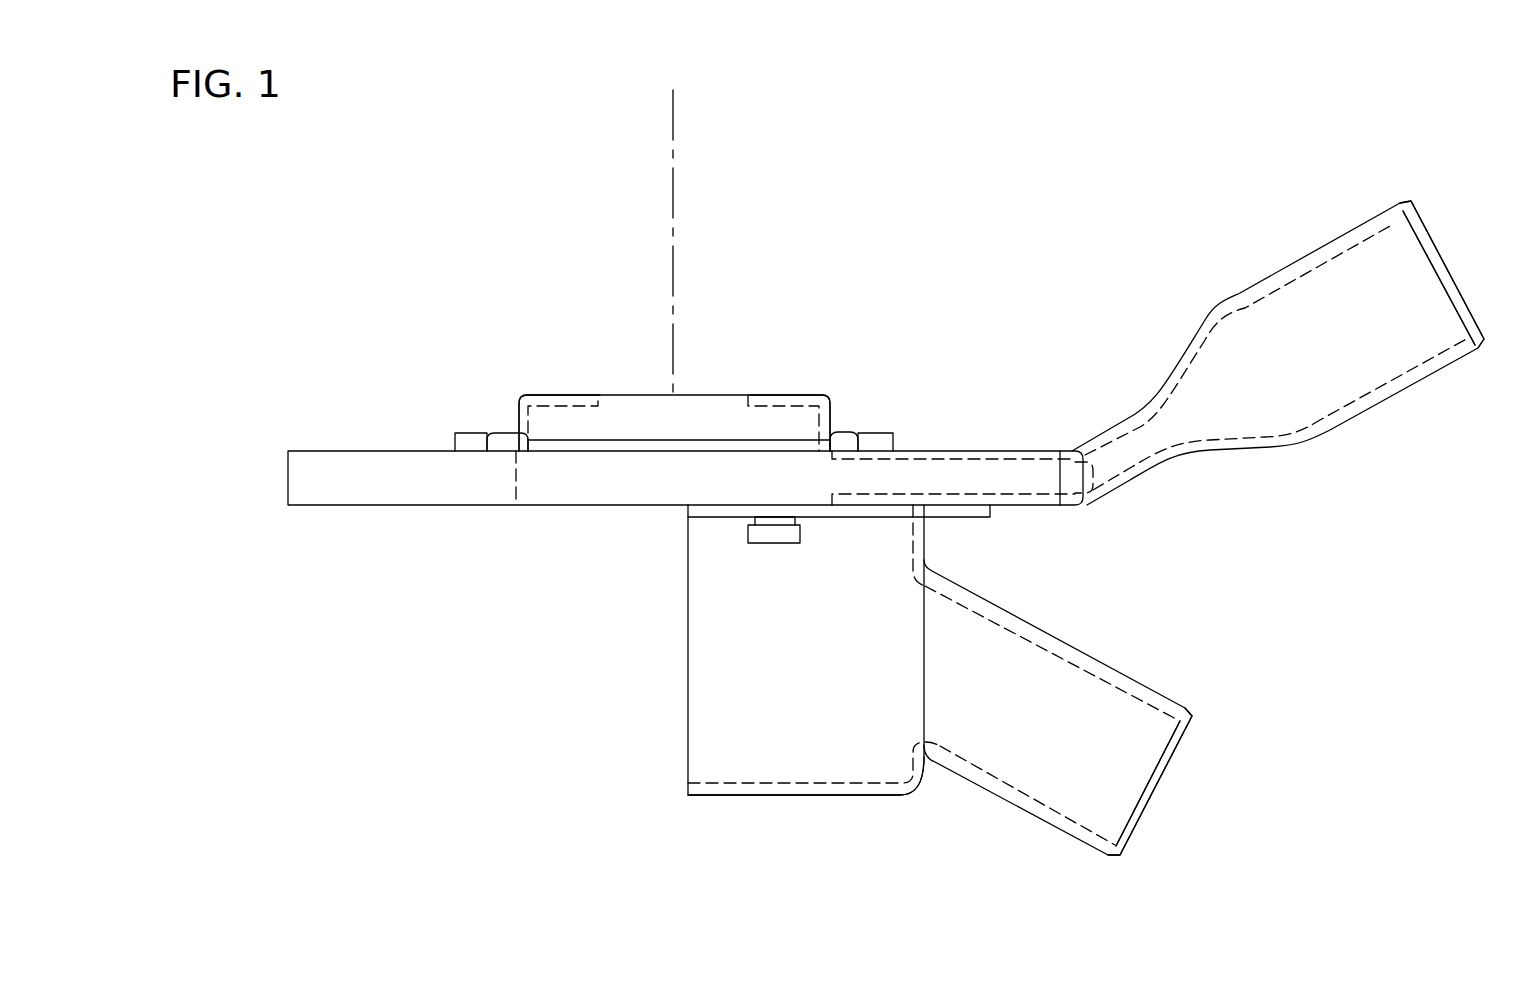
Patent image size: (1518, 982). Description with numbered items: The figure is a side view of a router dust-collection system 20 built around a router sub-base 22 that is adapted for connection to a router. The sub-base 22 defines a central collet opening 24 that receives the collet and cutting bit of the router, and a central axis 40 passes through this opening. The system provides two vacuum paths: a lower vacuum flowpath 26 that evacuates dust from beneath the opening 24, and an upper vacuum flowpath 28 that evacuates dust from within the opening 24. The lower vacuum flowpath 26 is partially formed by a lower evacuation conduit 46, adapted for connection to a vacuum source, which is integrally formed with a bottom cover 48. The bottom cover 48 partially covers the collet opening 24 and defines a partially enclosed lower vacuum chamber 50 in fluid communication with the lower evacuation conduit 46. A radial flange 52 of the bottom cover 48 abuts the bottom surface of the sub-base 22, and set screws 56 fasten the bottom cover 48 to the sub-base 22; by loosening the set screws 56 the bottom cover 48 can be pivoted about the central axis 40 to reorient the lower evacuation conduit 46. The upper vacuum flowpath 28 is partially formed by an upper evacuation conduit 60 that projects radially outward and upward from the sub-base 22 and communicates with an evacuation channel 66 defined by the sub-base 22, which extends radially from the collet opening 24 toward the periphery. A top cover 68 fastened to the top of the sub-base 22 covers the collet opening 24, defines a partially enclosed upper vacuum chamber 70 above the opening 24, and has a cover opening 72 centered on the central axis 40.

The router dust-collection system 20 is at (966, 268).
The router sub-base 22 is at (280, 515).
The central collet opening 24 is at (516, 481).
The lower vacuum flowpath 26 is at (995, 615).
The upper vacuum flowpath 28 is at (1226, 297).
The central axis 40 is at (673, 255).
The lower evacuation conduit 46 is at (1138, 683).
The bottom cover 48 is at (783, 795).
The lower vacuum chamber 50 is at (722, 673).
The radial flange 52 is at (962, 517).
The set screws 56 is at (768, 543).
The upper evacuation conduit 60 is at (1322, 245).
The evacuation channel 66 is at (943, 458).
The top cover 68 is at (832, 398).
The upper vacuum chamber 70 is at (528, 412).
The cover opening 72 is at (597, 395).